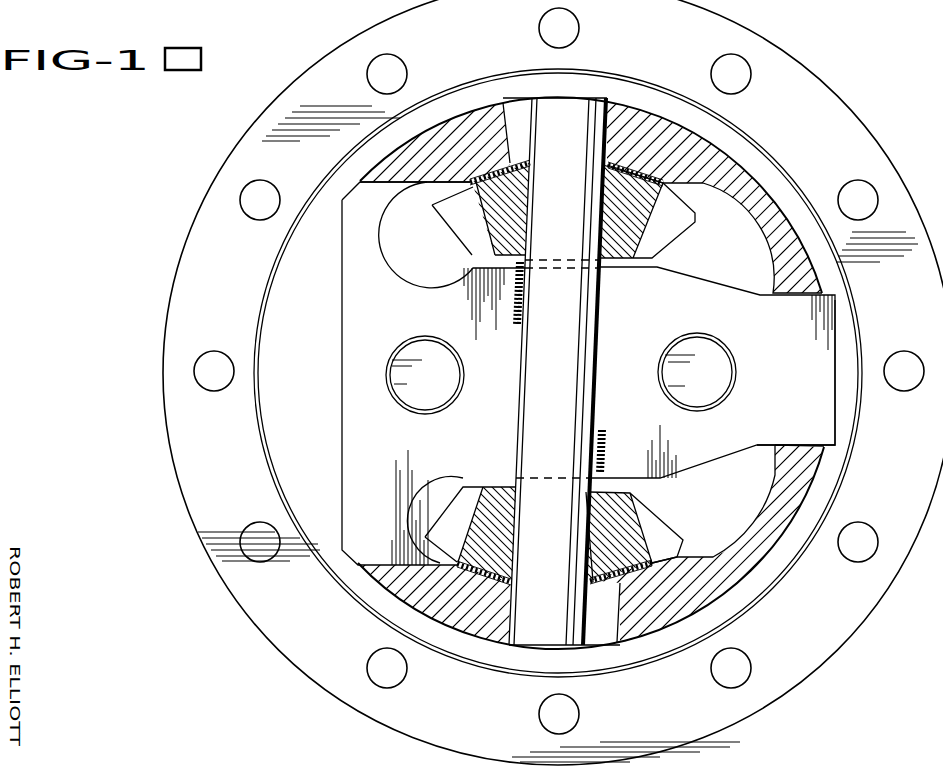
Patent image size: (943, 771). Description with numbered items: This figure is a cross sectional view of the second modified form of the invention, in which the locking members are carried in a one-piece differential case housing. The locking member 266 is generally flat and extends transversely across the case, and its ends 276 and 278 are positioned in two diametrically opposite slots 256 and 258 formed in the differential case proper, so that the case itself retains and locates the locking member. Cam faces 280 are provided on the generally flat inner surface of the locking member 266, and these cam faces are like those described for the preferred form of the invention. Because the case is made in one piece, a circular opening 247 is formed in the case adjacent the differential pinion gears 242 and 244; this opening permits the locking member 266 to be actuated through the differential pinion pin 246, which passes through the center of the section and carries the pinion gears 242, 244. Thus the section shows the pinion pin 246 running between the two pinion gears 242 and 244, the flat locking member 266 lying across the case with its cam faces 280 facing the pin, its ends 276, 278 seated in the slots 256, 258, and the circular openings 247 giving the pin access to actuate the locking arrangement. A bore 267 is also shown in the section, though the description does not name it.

The differential pinion gear 242 is at (664, 233).
The differential pinion gear 244 is at (630, 530).
The differential pinion pin 246 is at (574, 421).
The circular opening 247 is at (520, 103).
The slot 256 is at (377, 182).
The slot 258 is at (803, 442).
The locking member 266 is at (671, 320).
The bore 267 is at (440, 385).
The end of locking member 276 is at (342, 344).
The end of locking member 278 is at (843, 346).
The cam face 280 is at (510, 335).